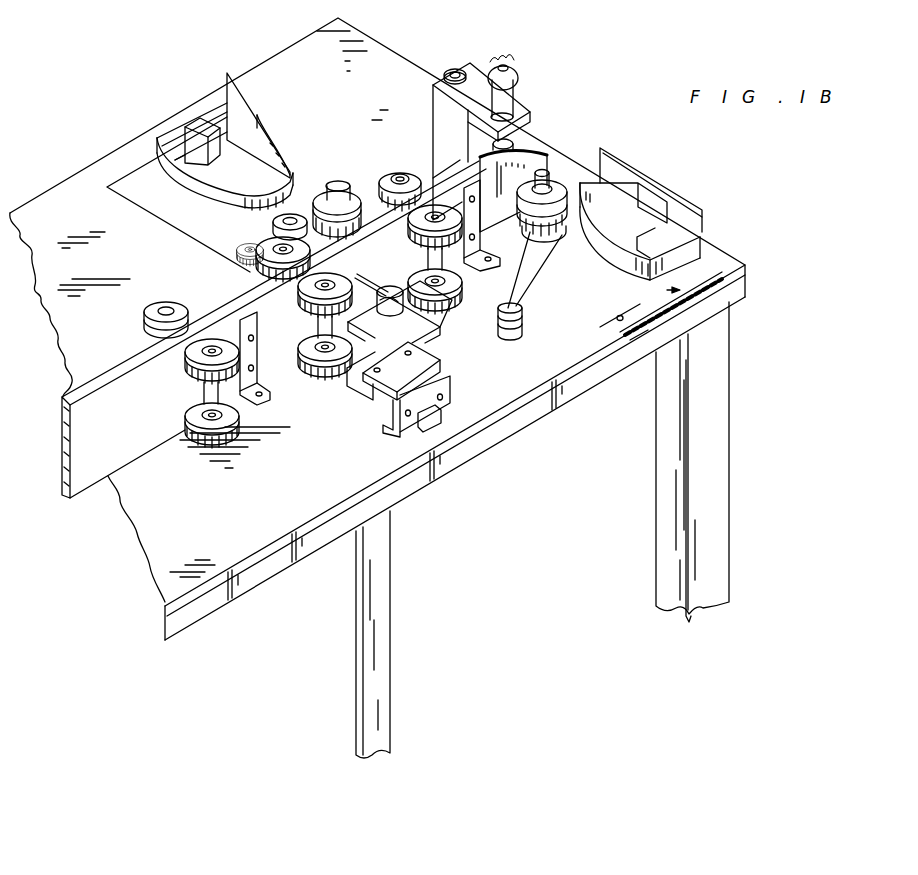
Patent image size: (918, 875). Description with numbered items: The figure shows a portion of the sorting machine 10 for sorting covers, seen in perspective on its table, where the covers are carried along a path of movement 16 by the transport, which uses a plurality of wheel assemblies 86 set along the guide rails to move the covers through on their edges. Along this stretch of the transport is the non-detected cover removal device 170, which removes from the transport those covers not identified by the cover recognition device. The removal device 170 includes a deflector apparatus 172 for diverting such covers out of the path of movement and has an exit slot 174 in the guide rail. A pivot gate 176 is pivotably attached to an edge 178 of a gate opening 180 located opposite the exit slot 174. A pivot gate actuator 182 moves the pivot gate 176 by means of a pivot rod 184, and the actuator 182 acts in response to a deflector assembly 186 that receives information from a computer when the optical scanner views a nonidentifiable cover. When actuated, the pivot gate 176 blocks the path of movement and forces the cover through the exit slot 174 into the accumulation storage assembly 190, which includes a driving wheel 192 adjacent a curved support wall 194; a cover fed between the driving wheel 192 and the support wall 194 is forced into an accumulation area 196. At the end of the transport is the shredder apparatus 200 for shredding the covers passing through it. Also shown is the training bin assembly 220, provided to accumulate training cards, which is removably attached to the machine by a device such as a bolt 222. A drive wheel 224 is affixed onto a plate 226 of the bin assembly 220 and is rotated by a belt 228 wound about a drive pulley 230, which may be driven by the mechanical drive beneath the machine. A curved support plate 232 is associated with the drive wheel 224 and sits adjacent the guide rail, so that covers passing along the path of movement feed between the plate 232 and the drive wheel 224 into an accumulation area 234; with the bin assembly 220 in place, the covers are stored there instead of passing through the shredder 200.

The sorting machine 10 is at (395, 36).
The path of movement 16 is at (84, 359).
The wheel assemblies 86 is at (197, 298).
The non-detected cover removal device 170 is at (378, 152).
The deflector apparatus 172 is at (447, 325).
The exit slot 174 is at (320, 248).
The pivot gate 176 is at (448, 290).
The edge 178 is at (294, 288).
The gate opening 180 is at (375, 260).
The pivot gate actuator 182 is at (430, 322).
The pivot rod 184 is at (437, 297).
The deflector assembly 186 is at (405, 378).
The accumulation storage assembly 190 is at (293, 130).
The driving wheel 192 is at (333, 180).
The curved support wall 194 is at (373, 170).
The accumulation area 196 is at (277, 116).
The shredder apparatus 200 is at (531, 79).
The training bin assembly 220 is at (720, 292).
The bolt 222 is at (615, 325).
The drive wheel 224 is at (548, 185).
The plate 226 is at (642, 322).
The belt 228 is at (527, 295).
The drive pulley 230 is at (515, 328).
The curved support plate 232 is at (510, 152).
The accumulation area 234 is at (616, 167).